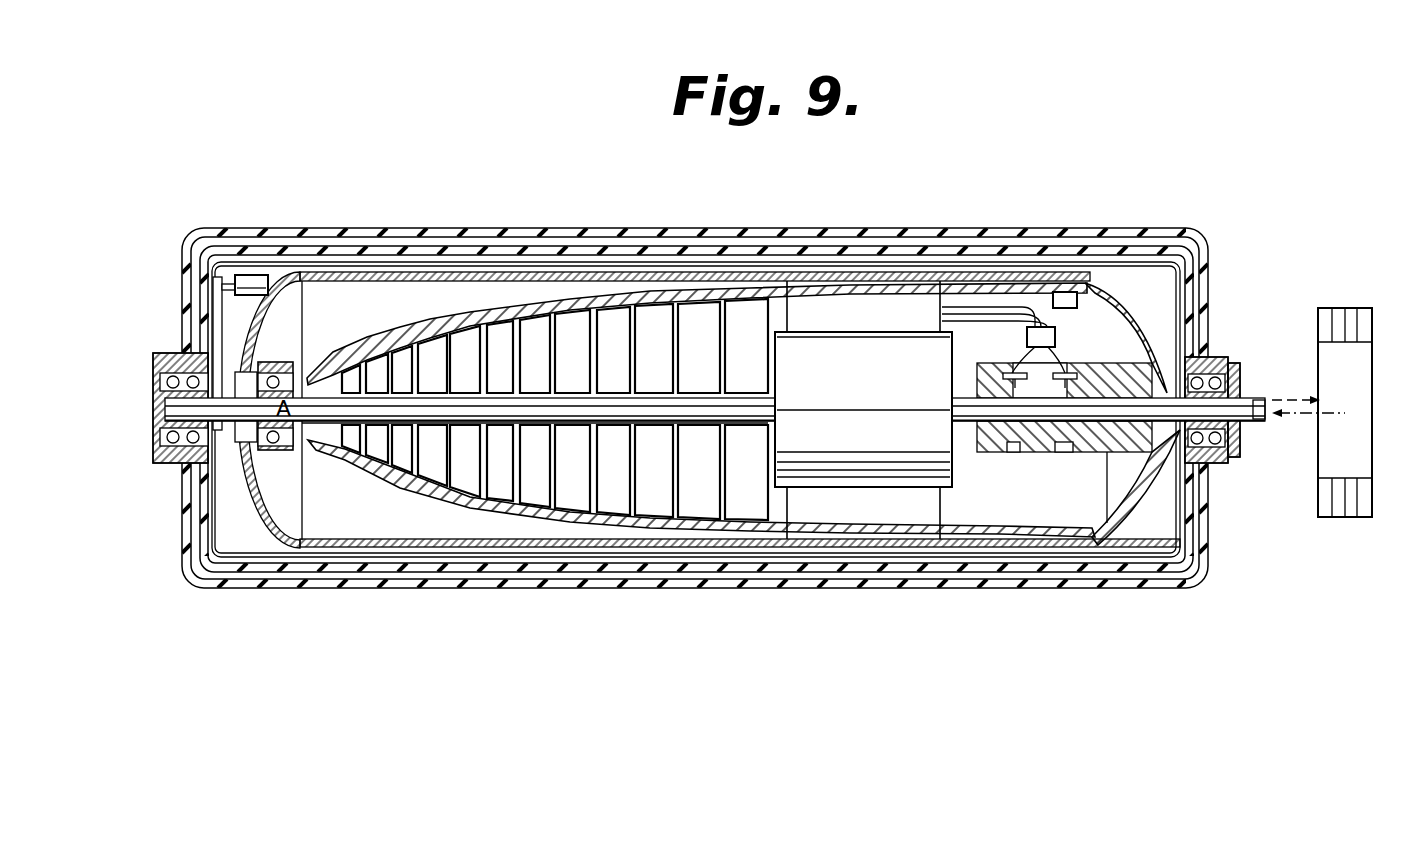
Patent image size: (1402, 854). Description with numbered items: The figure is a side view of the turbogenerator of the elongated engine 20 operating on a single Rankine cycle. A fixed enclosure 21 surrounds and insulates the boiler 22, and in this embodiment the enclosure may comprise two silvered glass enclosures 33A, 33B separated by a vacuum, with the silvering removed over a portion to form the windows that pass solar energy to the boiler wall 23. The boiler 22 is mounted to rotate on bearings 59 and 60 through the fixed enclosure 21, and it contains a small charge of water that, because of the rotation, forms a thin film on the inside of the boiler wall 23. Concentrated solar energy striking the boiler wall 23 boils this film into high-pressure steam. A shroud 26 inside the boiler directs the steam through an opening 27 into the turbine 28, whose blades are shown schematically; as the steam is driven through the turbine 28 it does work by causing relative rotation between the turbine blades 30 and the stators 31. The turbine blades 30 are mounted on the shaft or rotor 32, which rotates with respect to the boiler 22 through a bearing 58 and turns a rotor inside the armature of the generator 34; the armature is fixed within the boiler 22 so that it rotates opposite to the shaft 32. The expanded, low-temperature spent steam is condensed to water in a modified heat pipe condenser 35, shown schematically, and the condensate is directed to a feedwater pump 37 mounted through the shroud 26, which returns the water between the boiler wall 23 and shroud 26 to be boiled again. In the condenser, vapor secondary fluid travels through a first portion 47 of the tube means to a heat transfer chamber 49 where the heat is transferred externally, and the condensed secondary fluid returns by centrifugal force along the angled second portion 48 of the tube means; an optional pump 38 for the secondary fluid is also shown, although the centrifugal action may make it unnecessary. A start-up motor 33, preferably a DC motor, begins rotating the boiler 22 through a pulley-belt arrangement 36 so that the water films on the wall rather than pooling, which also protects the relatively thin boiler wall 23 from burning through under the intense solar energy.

The engine 20 is at (845, 215).
The fixed enclosure 21 is at (490, 240).
The boiler 22 is at (927, 548).
The boiler wall 23 is at (858, 560).
The shroud 26 is at (470, 505).
The opening 27 is at (335, 433).
The turbine 28 is at (611, 465).
The turbine blades 30 is at (608, 318).
The stators 31 is at (660, 308).
The shaft 32 is at (403, 402).
The start-up motor 33 is at (252, 282).
The glass enclosure 33A is at (1195, 540).
The glass enclosure 33B is at (1185, 590).
The generator 34 is at (878, 352).
The heat pipe condenser 35 is at (815, 305).
The pulley-belt arrangement 36 is at (225, 432).
The feedwater pump 37 is at (1065, 292).
The pump 38 is at (1052, 340).
The first portion of tube means 47 is at (1242, 432).
The second portion of tube means 48 is at (983, 307).
The heat transfer chamber 49 is at (1340, 308).
The bearing 58 is at (277, 363).
The bearing 59 is at (184, 362).
The bearing 60 is at (1213, 355).